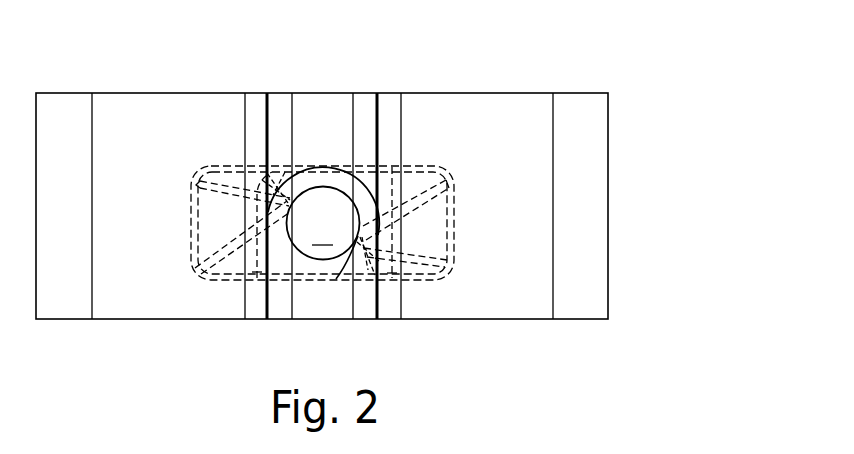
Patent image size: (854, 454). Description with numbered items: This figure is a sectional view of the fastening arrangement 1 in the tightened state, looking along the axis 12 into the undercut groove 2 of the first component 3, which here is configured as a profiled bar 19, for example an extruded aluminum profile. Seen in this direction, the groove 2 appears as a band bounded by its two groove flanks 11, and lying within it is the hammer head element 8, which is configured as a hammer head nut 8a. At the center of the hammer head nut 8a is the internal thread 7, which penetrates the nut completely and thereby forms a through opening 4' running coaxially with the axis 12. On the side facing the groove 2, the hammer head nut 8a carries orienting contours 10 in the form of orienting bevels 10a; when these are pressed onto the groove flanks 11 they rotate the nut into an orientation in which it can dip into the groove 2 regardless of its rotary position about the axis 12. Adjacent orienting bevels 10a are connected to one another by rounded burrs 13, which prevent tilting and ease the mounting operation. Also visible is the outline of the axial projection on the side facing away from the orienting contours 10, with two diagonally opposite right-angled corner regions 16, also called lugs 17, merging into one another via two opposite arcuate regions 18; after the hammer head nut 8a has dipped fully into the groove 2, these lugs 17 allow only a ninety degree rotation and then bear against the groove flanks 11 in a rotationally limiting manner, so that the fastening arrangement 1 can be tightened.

The fastening arrangement 1 is at (391, 194).
The undercut groove 2 is at (313, 113).
The first component 3 is at (406, 206).
The profiled bar 19 is at (588, 262).
The through opening 4' is at (322, 233).
The internal thread 7 is at (340, 275).
The hammer head element 8 is at (253, 129).
The hammer head nut 8a is at (227, 162).
The orienting contours 10 is at (469, 223).
The orienting bevels 10a is at (432, 218).
The groove flanks 11 is at (273, 308).
The axis 12 is at (323, 142).
The rounded burrs 13 is at (220, 183).
The corner regions 16 is at (319, 200).
The lugs 17 is at (377, 170).
The arcuate regions 18 is at (287, 178).